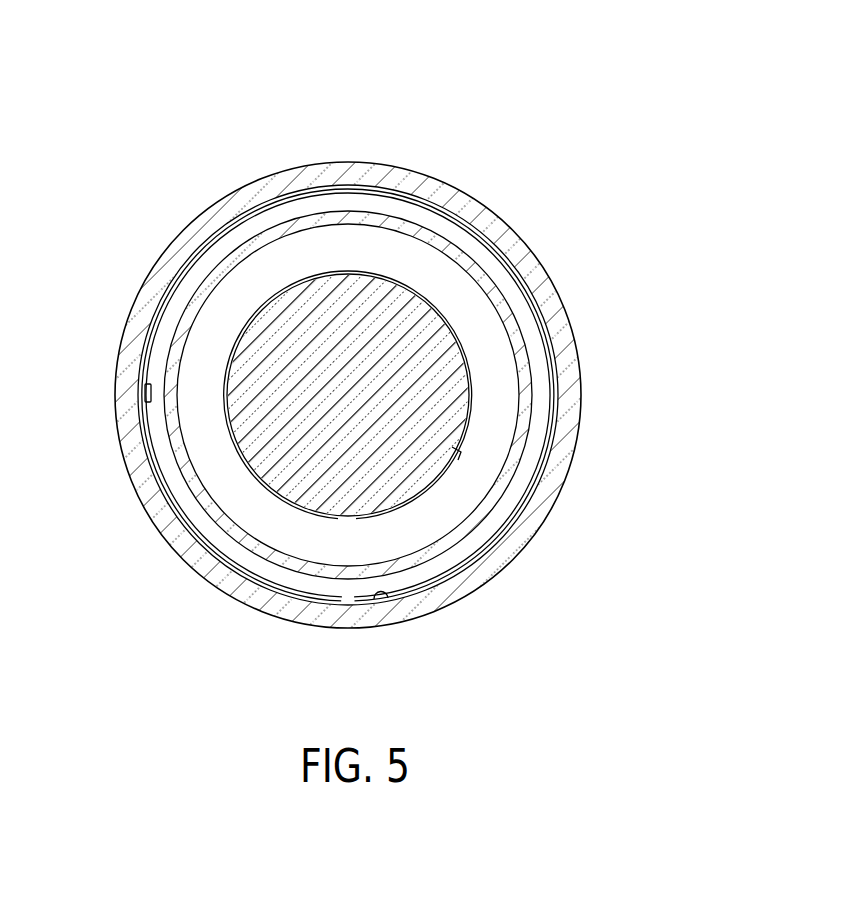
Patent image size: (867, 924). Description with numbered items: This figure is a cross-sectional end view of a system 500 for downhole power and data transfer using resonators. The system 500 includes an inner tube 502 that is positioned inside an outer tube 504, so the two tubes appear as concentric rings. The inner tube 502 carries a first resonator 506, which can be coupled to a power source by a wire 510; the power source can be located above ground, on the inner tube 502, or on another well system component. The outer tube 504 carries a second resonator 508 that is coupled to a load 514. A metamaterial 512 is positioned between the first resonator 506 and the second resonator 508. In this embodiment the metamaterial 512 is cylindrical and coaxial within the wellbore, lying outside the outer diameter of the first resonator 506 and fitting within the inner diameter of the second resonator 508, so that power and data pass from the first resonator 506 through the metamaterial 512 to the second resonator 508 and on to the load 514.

The system 500 is at (622, 77).
The inner tube 502 is at (440, 333).
The outer tube 504 is at (352, 160).
The first resonator 506 is at (394, 273).
The second resonator 508 is at (380, 604).
The wire 510 is at (459, 455).
The metamaterial 512 is at (186, 481).
The load 514 is at (149, 392).